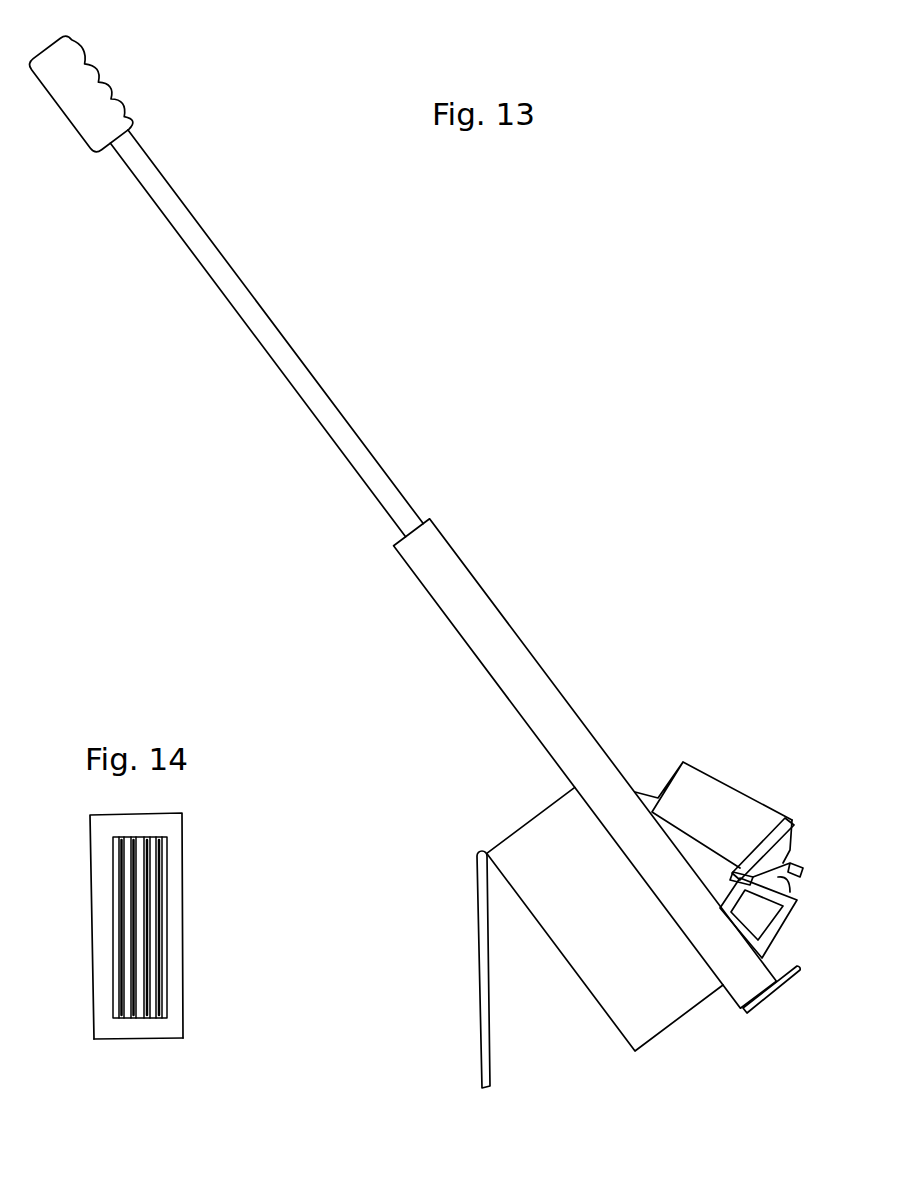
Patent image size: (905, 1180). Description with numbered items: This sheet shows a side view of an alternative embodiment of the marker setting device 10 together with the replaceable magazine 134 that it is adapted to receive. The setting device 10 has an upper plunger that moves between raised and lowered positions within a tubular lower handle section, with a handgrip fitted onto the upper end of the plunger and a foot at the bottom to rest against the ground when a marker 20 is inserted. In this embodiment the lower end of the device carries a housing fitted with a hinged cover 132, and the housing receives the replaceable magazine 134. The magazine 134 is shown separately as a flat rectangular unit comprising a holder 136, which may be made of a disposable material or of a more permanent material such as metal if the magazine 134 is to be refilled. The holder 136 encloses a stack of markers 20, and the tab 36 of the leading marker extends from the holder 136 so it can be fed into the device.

In FIG. 13, the marker setting device 10 is at (527, 489).
In FIG. 14, the marker 20 is at (162, 943).
In FIG. 14, the tab 36 is at (188, 1027).
In FIG. 13, the hinged cover 132 is at (488, 958).
In FIG. 14, the replaceable magazine 134 is at (237, 883).
In FIG. 14, the holder 136 is at (172, 857).